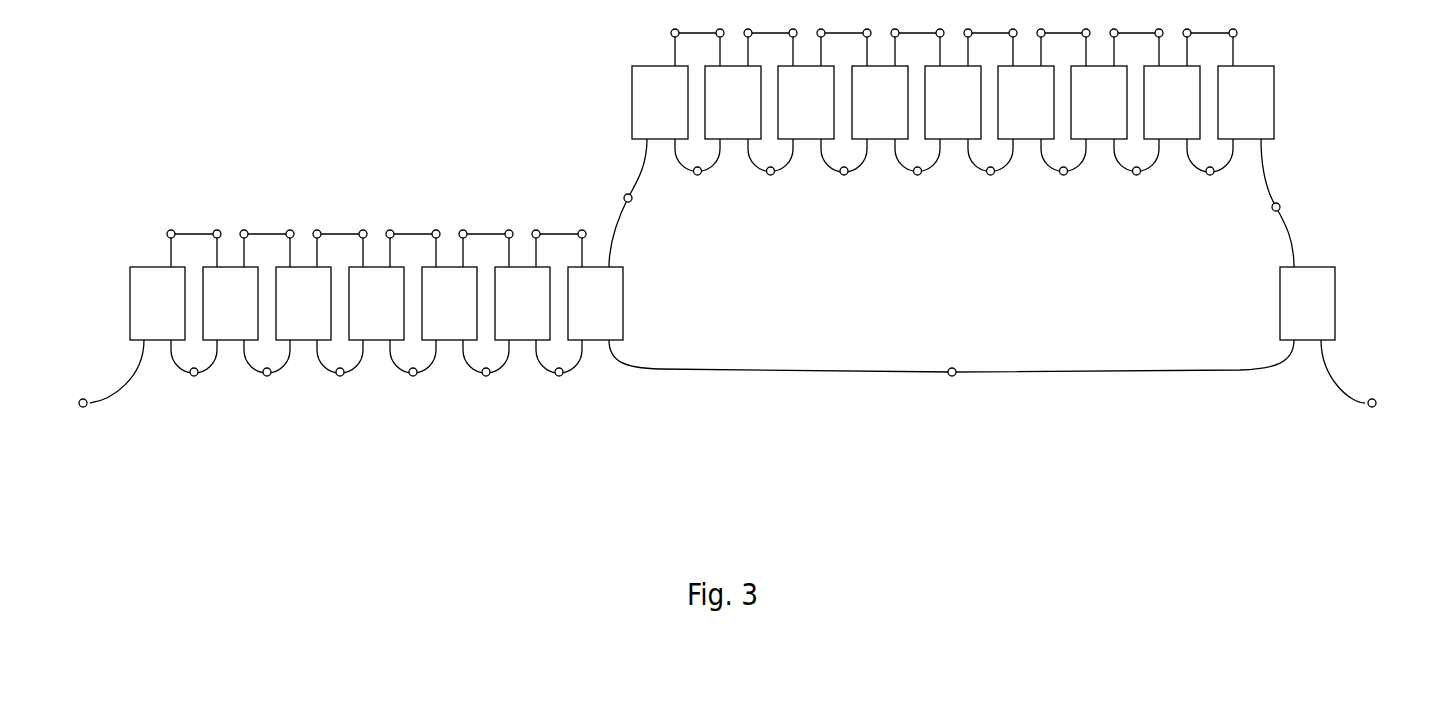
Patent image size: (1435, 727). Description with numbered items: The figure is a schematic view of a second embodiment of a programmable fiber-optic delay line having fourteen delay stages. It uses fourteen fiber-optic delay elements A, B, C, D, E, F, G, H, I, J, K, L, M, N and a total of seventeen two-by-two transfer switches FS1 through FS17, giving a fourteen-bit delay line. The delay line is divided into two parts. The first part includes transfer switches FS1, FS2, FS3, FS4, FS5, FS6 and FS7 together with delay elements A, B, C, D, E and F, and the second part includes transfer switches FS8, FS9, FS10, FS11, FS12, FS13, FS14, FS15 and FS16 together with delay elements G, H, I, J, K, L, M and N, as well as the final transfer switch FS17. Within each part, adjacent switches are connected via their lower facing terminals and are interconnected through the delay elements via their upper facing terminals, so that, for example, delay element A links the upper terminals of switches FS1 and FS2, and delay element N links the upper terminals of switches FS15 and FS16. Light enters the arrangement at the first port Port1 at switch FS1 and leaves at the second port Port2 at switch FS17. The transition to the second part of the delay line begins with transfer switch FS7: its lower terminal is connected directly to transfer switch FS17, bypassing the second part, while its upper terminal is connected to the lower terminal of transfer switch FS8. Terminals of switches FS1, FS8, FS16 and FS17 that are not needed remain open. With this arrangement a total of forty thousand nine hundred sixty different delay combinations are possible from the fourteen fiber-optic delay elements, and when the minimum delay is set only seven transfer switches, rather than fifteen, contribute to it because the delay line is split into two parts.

The transfer switch FS1 is at (157, 303).
The transfer switch FS2 is at (230, 303).
The transfer switch FS3 is at (303, 303).
The transfer switch FS4 is at (376, 303).
The transfer switch FS5 is at (449, 303).
The transfer switch FS6 is at (522, 303).
The transfer switch FS7 is at (595, 303).
The transfer switch FS8 is at (660, 102).
The transfer switch FS9 is at (733, 102).
The transfer switch FS10 is at (806, 102).
The transfer switch FS11 is at (880, 102).
The transfer switch FS12 is at (953, 102).
The transfer switch FS13 is at (1026, 102).
The transfer switch FS14 is at (1099, 102).
The transfer switch FS15 is at (1172, 102).
The transfer switch FS16 is at (1246, 102).
The transfer switch FS17 is at (1307, 303).
The fiber-optic delay element A is at (194, 241).
The fiber-optic delay element B is at (267, 241).
The fiber-optic delay element C is at (340, 241).
The fiber-optic delay element D is at (413, 241).
The fiber-optic delay element E is at (486, 241).
The fiber-optic delay element F is at (559, 241).
The fiber-optic delay element G is at (697, 40).
The fiber-optic delay element H is at (770, 40).
The fiber-optic delay element I is at (844, 40).
The fiber-optic delay element J is at (917, 40).
The fiber-optic delay element K is at (990, 40).
The fiber-optic delay element L is at (1063, 40).
The fiber-optic delay element M is at (1136, 40).
The fiber-optic delay element N is at (1210, 40).
The Port 1 input/output port Port1 is at (80, 373).
The Port 2 input/output port Port2 is at (1377, 373).